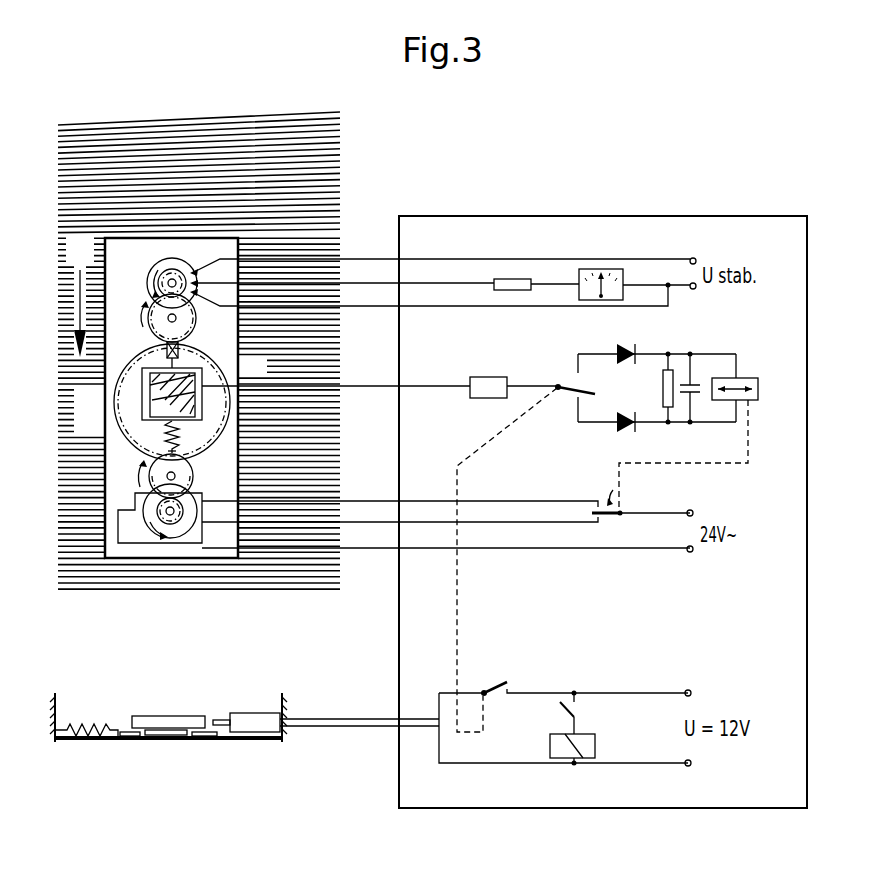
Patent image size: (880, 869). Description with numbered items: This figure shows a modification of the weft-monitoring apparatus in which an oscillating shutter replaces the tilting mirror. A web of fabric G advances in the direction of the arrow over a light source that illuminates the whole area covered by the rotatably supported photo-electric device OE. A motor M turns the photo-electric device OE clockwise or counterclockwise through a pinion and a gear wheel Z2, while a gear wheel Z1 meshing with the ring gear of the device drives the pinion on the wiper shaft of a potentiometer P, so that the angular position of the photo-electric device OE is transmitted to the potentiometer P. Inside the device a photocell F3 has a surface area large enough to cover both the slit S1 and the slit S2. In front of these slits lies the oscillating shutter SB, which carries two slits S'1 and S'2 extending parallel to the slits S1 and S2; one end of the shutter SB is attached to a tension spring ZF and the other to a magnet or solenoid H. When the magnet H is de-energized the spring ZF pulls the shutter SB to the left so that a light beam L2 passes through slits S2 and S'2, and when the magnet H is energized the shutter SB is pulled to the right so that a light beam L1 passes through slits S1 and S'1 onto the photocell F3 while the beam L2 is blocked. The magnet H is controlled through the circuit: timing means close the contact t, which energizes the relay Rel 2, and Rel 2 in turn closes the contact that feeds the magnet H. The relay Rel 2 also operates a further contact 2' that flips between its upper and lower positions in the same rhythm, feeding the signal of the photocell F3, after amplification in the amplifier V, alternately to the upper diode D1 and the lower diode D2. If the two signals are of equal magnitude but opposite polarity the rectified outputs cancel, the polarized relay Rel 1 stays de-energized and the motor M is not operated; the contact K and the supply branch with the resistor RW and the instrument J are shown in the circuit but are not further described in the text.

The web of fabric G is at (79, 296).
The potentiometer P is at (160, 264).
The gear wheel Z1 is at (185, 318).
The magnet or solenoid H is at (183, 350).
The photo-electric device OE is at (207, 433).
The photocell F3 is at (202, 378).
The slit S1 is at (150, 381).
The slit S2 is at (150, 410).
The shutter slit S'1 is at (132, 591).
The shutter slit S'2 is at (112, 590).
The oscillating shutter SB is at (202, 403).
The tension spring ZF is at (166, 437).
The gear wheel Z2 is at (183, 477).
The motor M is at (183, 522).
The contact / switch K is at (608, 528).
The adjusting resistor RW is at (517, 278).
The indicating instrument / meter J is at (619, 268).
The amplifier V is at (487, 414).
The contact of relay Rel 2 2' is at (526, 558).
The upper diode D1 is at (627, 342).
The lower diode D2 is at (629, 411).
The polarized relay Rel 1 is at (753, 389).
The contact t is at (562, 706).
The relay Rel 2 is at (550, 746).
The light beam L1 is at (195, 760).
The light beam L2 is at (143, 760).